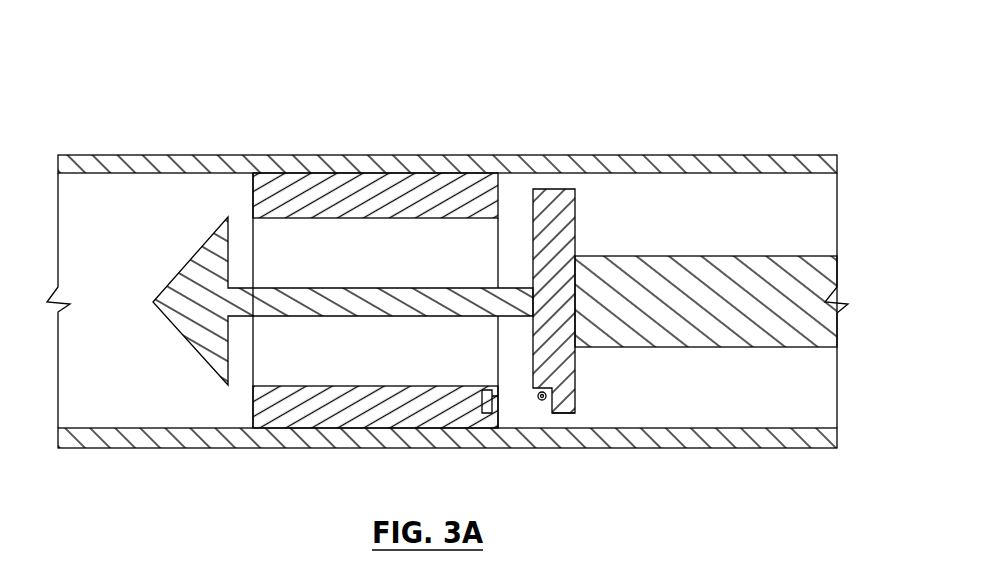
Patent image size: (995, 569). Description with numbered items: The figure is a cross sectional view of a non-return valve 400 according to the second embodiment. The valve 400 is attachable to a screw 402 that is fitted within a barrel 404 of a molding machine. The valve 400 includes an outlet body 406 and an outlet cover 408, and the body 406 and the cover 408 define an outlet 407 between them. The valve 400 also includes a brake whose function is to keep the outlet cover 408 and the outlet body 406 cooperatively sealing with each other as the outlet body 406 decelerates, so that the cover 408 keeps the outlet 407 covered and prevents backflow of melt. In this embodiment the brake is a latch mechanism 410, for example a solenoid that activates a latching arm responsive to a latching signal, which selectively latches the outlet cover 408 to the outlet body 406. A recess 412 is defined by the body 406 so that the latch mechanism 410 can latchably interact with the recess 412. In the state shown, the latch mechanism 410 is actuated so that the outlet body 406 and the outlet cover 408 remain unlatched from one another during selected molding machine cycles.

The non-return valve 400 is at (575, 97).
The screw 402 is at (635, 273).
The barrel 404 is at (551, 157).
The outlet body 406 is at (557, 223).
The outlet 407 is at (562, 420).
The outlet cover 408 is at (415, 192).
The latch mechanism 410 is at (529, 411).
The recess 412 is at (487, 413).